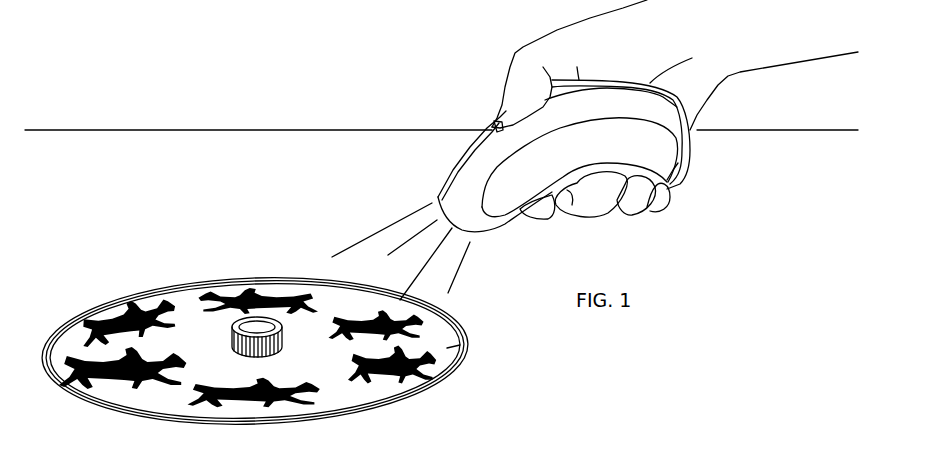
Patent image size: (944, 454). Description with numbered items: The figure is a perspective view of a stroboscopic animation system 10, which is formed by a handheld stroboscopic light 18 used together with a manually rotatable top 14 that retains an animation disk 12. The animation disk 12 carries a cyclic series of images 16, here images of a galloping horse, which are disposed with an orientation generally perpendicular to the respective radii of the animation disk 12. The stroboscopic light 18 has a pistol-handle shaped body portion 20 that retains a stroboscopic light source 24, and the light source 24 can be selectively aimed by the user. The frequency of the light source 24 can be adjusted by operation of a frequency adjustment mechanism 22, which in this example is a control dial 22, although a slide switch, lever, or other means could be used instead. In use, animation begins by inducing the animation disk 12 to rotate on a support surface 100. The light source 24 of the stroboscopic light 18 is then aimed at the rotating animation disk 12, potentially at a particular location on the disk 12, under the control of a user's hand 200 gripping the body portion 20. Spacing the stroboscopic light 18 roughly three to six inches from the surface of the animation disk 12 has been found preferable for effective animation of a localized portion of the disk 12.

The stroboscopic animation system 10 is at (331, 118).
The support surface 100 is at (98, 165).
The animation disk 12 is at (465, 342).
The manually rotatable top 14 is at (432, 393).
The images 16 is at (137, 317).
The stroboscopic light 18 is at (711, 176).
The pistol-handle shaped body portion 20 is at (452, 168).
The frequency adjustment mechanism 22 is at (492, 120).
The stroboscopic light source 24 is at (477, 233).
The user's hand 200 is at (550, 47).